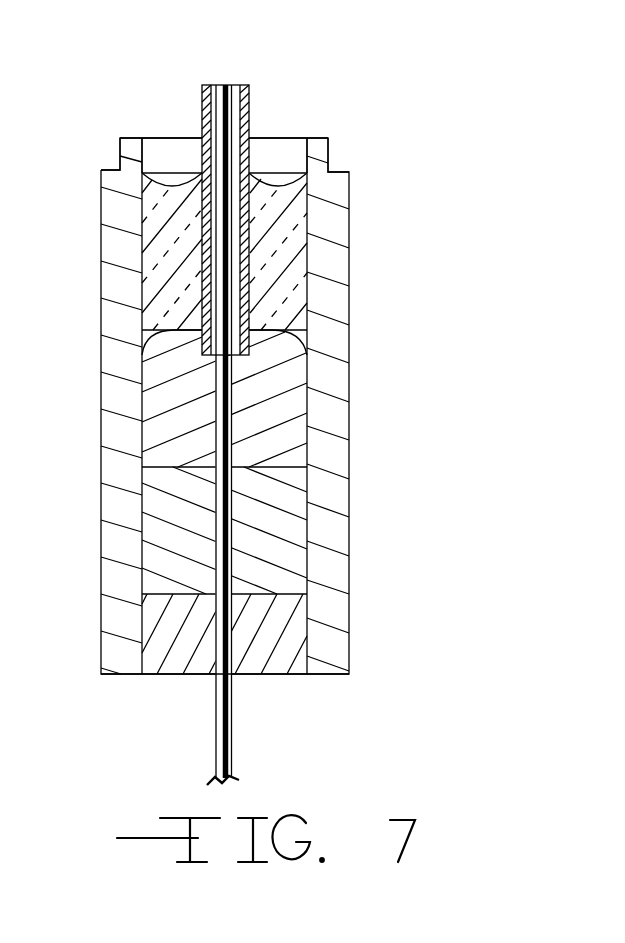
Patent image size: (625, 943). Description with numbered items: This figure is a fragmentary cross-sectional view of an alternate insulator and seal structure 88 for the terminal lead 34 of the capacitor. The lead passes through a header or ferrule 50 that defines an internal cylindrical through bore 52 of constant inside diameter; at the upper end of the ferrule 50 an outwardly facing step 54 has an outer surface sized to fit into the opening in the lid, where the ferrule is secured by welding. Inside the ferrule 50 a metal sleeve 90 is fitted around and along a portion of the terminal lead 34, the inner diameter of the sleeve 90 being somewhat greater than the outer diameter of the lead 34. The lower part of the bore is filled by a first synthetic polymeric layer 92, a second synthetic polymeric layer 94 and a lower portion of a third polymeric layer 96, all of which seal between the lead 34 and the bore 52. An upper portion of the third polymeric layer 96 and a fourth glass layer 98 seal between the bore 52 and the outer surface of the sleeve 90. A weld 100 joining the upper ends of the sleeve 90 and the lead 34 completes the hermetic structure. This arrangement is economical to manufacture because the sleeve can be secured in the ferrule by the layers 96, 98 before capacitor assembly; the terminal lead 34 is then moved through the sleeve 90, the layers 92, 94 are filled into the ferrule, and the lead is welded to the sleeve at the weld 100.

The terminal lead 34 is at (249, 120).
The ferrule 50 is at (337, 203).
The bore 52 is at (145, 156).
The outwardly facing step 54 is at (118, 157).
The insulator and seal structure 88 is at (314, 392).
The metal sleeve 90 is at (202, 122).
The first synthetic polymeric layer 92 is at (290, 631).
The second synthetic polymeric layer 94 is at (290, 530).
The third polymeric layer 96 is at (282, 393).
The fourth glass layer 98 is at (292, 267).
The weld 100 is at (235, 86).